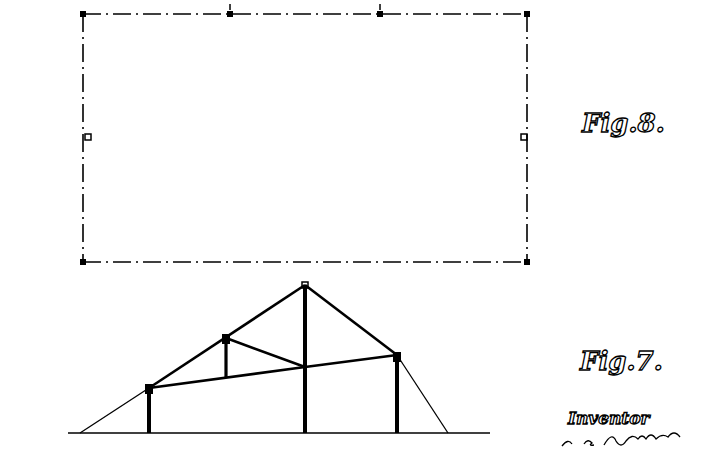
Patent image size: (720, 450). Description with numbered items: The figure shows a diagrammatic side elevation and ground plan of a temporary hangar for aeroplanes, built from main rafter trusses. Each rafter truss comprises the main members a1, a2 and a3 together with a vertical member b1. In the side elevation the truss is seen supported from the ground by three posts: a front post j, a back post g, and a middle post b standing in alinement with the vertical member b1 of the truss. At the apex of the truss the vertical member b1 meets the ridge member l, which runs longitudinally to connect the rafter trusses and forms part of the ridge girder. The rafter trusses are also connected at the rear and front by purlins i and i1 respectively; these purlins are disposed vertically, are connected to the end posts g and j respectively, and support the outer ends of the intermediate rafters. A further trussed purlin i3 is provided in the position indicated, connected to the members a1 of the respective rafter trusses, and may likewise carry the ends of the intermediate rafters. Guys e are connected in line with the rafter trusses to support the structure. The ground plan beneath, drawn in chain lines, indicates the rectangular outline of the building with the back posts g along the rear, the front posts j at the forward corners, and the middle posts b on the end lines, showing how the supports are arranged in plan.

In FIG. 8, the back post g is at (305, 34).
In FIG. 7, the back post g is at (151, 412).
In FIG. 8, the middle post b is at (85, 136).
In FIG. 7, the middle post b is at (307, 407).
In FIG. 7, the vertical member b1 is at (307, 322).
In FIG. 8, the front post j is at (83, 263).
In FIG. 7, the front post j is at (399, 407).
In FIG. 7, the main rafter member a1 is at (272, 308).
In FIG. 7, the main rafter member a2 is at (350, 312).
In FIG. 7, the main rafter member a3 is at (252, 375).
In FIG. 7, the rear purlin i is at (147, 387).
In FIG. 7, the front purlin i1 is at (410, 350).
In FIG. 7, the trussed purlin i3 is at (222, 337).
In FIG. 7, the guy e is at (128, 400).
In FIG. 7, the ridge member l is at (309, 285).